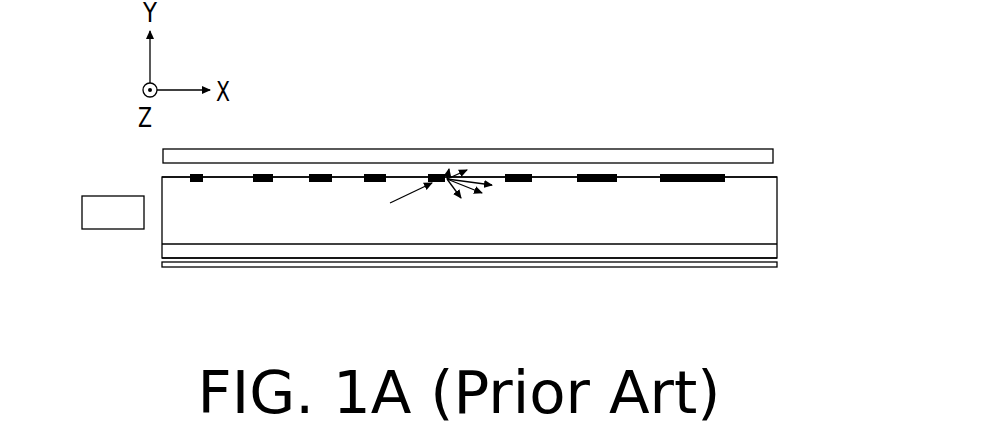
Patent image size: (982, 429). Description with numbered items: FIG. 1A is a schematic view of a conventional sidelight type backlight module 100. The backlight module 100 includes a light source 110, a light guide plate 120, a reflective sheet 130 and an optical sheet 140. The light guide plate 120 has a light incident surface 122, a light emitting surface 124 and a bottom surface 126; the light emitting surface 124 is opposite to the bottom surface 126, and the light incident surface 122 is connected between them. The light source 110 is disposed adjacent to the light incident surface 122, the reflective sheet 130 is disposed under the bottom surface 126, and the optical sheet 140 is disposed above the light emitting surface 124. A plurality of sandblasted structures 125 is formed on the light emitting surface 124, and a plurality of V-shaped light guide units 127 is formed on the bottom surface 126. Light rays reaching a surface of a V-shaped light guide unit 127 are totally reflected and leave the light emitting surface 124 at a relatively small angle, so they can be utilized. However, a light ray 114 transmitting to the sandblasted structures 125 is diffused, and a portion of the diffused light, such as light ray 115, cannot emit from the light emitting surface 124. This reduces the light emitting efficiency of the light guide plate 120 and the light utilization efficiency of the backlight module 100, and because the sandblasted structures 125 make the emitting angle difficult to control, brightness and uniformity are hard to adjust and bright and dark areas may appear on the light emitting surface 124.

The backlight module 100 is at (487, 225).
The light source 110 is at (91, 194).
The light ray 114 is at (422, 188).
The light ray 115 is at (487, 191).
The light guide plate 120 is at (767, 212).
The light incident surface 122 is at (159, 181).
The light emitting surface 124 is at (752, 178).
The sandblasted structures 125 is at (600, 174).
The bottom surface 126 is at (768, 243).
The V-shaped light guide units 127 is at (658, 252).
The reflective sheet 130 is at (745, 265).
The optical sheet 140 is at (735, 155).